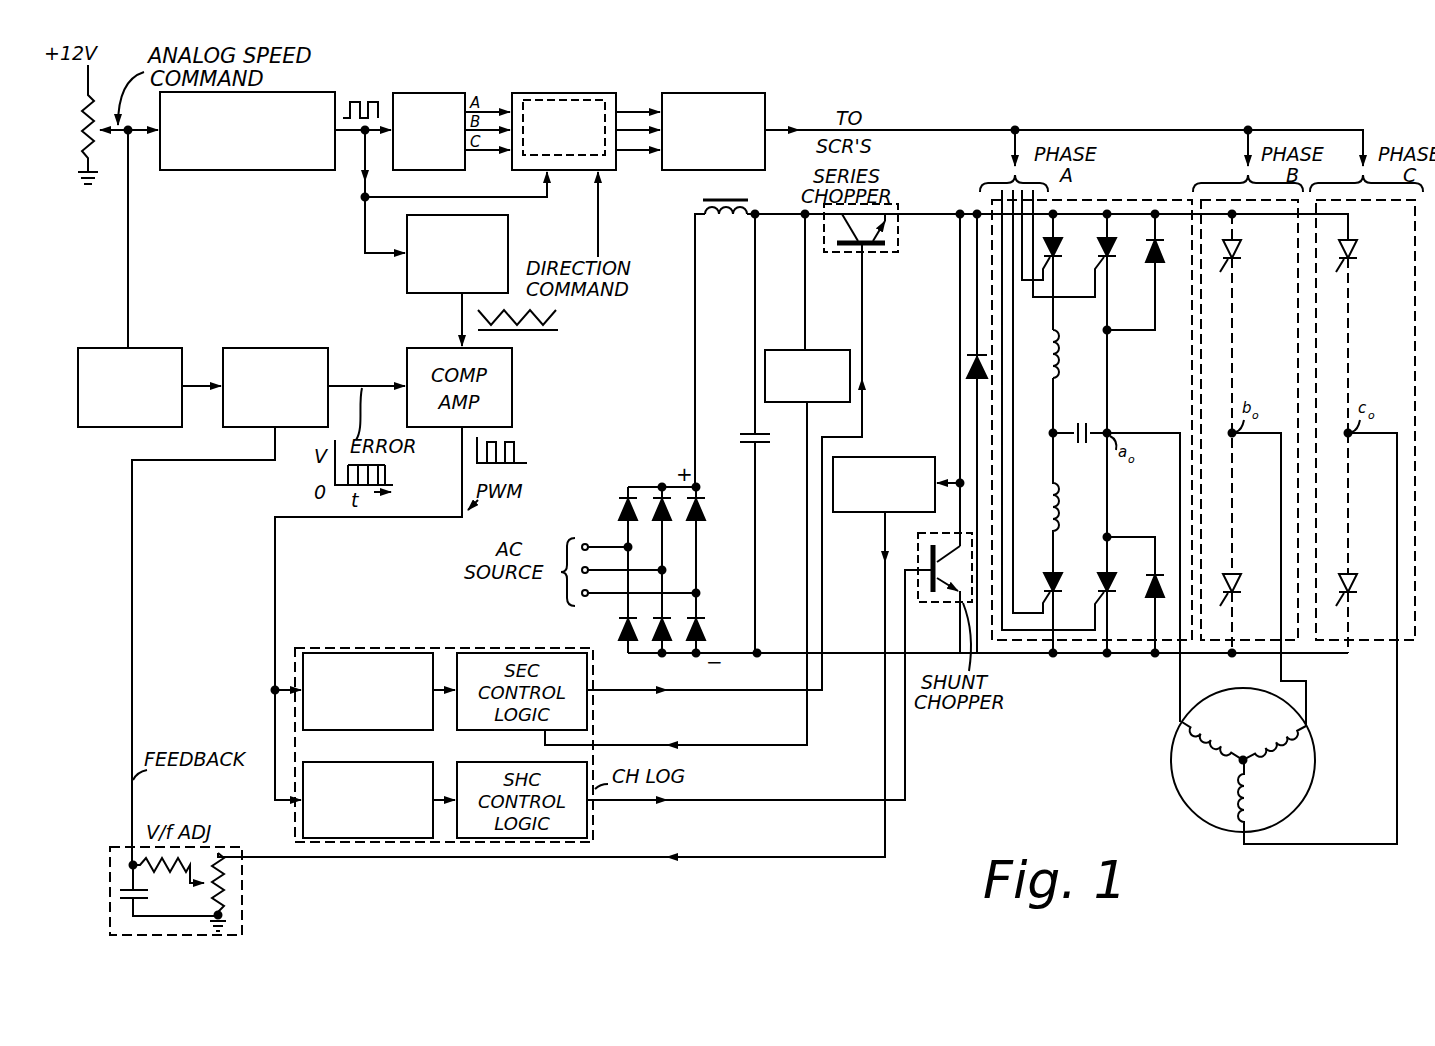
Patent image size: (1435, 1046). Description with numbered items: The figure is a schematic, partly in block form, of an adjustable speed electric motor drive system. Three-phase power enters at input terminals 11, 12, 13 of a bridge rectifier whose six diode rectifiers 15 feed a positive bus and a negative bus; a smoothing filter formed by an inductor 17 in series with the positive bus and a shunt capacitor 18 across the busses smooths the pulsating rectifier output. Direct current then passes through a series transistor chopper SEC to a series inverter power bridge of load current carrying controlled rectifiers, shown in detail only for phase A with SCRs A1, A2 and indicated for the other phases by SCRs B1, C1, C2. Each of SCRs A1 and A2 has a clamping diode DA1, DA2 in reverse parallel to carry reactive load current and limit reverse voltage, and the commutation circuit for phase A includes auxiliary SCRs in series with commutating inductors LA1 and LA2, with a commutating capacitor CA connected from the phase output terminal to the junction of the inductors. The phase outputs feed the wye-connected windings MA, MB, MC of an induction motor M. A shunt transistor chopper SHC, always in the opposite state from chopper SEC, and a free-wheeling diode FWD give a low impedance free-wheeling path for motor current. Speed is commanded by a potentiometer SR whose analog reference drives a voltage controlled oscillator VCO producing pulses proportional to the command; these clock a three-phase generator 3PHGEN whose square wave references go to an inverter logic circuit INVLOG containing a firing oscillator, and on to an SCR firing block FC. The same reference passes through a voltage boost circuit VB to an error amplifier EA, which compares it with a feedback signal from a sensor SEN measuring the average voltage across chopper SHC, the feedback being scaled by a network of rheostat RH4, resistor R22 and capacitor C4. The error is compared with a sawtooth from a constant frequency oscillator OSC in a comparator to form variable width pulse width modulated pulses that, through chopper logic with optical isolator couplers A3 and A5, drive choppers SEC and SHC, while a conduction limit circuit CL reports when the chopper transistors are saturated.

The input terminal 11 is at (586, 544).
The input terminal 12 is at (587, 570).
The input terminal 13 is at (583, 595).
The diode rectifiers 15 is at (662, 496).
The inductor 17 is at (732, 216).
The shunt capacitor 18 is at (752, 433).
The potentiometer SR is at (84, 106).
The voltage controlled oscillator VCO is at (205, 170).
The three-phase generator 3PHGEN is at (425, 93).
The inverter logic circuit INVLOG is at (558, 93).
The SCR firing circuit FC is at (714, 93).
The constant frequency oscillator OSC is at (508, 251).
The voltage boost circuit VB is at (138, 348).
The error amplifier EA is at (262, 348).
The series transistor chopper SEC is at (868, 252).
The conduction limit circuit CL is at (811, 349).
The free-wheeling diode FWD is at (964, 368).
The sensor SEN is at (888, 457).
The shunt transistor chopper SHC is at (931, 602).
The controlled rectifier A1 is at (1061, 250).
The clamping diode DA1 is at (1156, 266).
The commutating inductor LA1 is at (1060, 338).
The commutating capacitor CA is at (1078, 422).
The commutating inductor LA2 is at (1060, 498).
The controlled rectifier A2 is at (1061, 576).
The clamping diode DA2 is at (1135, 595).
The controlled rectifier B1 is at (1240, 252).
The controlled rectifier C1 is at (1356, 252).
The controlled rectifier C2 is at (1352, 602).
The induction motor M is at (1213, 760).
The phase winding MA is at (1204, 762).
The phase winding MB is at (1252, 804).
The phase winding MC is at (1268, 736).
The optical isolator coupler A3 is at (360, 653).
The optical isolator coupler A5 is at (360, 763).
The resistor R22 is at (132, 863).
The rheostat RH4 is at (231, 880).
The capacitor C4 is at (116, 893).